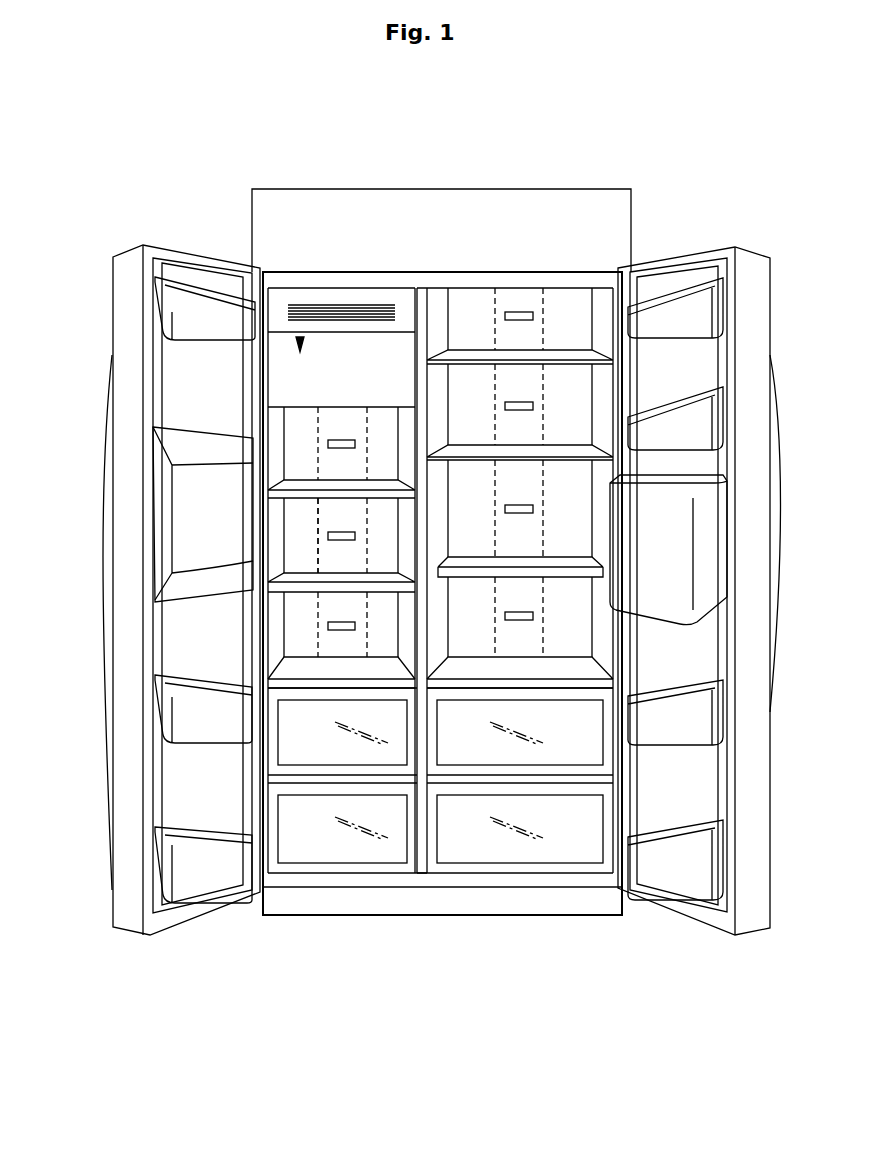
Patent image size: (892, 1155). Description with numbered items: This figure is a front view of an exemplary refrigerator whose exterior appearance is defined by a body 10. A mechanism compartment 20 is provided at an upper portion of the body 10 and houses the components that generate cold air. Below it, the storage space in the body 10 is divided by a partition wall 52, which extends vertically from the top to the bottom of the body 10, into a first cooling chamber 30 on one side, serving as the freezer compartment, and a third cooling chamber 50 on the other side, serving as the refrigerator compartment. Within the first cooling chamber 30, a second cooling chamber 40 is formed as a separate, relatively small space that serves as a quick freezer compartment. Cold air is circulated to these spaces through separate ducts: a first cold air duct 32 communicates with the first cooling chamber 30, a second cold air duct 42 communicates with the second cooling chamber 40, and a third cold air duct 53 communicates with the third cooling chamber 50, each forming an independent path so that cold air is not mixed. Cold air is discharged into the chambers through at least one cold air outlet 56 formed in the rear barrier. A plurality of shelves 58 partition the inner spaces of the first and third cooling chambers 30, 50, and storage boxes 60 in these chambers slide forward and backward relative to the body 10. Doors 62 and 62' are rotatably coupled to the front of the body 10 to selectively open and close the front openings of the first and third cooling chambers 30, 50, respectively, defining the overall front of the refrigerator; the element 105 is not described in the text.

The body 10 is at (491, 272).
The mechanism compartment 20 is at (570, 195).
The first cooling chamber 30 is at (313, 526).
The first cold air duct 32 is at (318, 555).
The second cooling chamber 40 is at (300, 337).
The second cold air duct 42 is at (336, 352).
The third cooling chamber 50 is at (491, 493).
The partition wall 52 is at (420, 360).
The third cold air duct 53 is at (545, 527).
The cold air outlet 56 is at (512, 615).
The shelves 58 is at (478, 450).
The storage boxes 60 is at (480, 752).
The door 62 is at (157, 590).
The door 62' is at (724, 591).
The door basket 105 is at (193, 519).